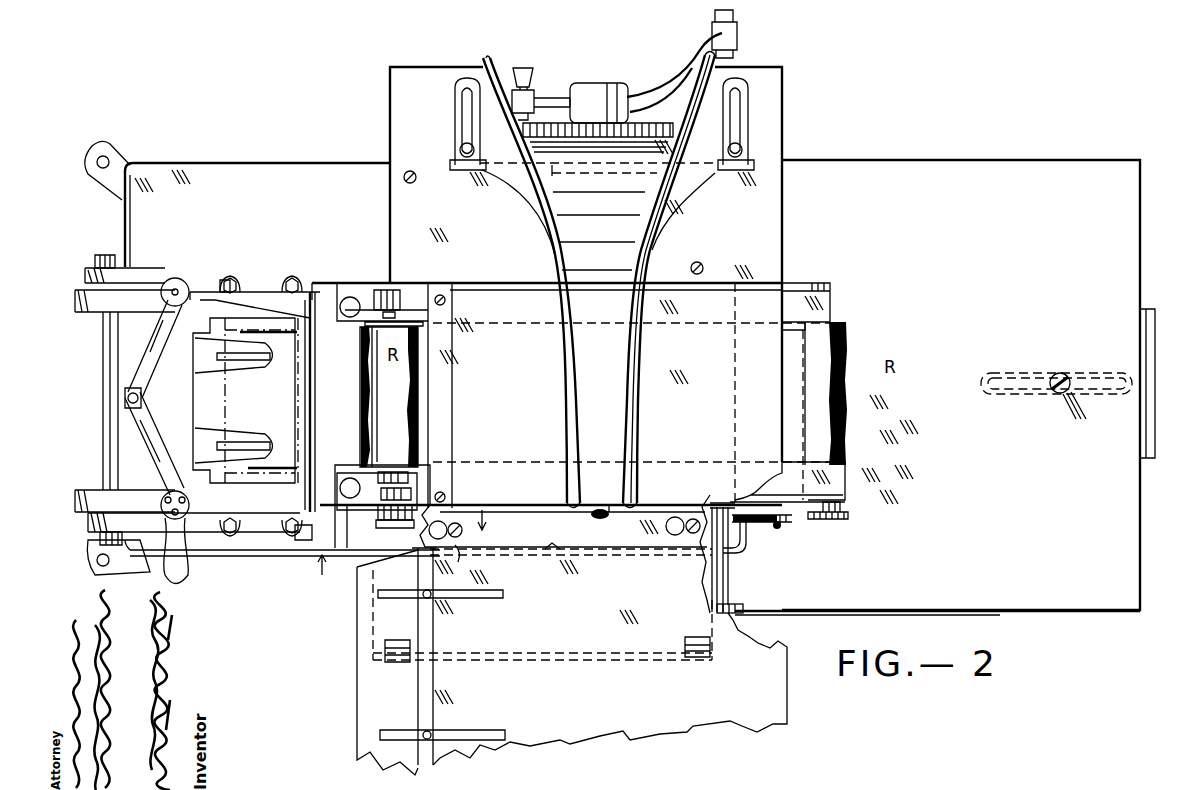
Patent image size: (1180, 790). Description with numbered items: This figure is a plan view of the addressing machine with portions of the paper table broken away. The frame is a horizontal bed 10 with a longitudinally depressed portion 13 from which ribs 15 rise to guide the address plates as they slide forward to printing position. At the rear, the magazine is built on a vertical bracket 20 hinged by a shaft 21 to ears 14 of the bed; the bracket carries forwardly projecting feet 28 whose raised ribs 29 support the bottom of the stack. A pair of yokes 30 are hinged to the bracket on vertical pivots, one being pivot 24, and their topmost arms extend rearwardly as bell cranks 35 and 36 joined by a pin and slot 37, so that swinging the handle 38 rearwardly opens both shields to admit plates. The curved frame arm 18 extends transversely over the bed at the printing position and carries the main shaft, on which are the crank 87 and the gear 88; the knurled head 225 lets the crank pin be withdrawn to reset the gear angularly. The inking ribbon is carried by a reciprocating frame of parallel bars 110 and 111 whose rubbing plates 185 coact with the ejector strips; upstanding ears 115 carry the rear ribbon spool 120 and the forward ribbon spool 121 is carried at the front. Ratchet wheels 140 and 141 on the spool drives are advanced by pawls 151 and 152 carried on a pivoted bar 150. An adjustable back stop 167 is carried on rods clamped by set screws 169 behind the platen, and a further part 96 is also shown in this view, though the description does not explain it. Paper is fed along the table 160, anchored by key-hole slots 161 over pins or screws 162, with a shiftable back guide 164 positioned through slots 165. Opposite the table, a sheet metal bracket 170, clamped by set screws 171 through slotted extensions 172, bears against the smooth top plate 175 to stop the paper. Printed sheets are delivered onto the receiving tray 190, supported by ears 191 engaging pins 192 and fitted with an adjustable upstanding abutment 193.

The horizontal bed 10 is at (289, 369).
The depressed portion 13 is at (350, 397).
The ears 14 is at (138, 272).
The ribs 15 is at (290, 462).
The curved frame arm 18 is at (598, 280).
The vertical bracket 20 is at (92, 309).
The shaft 21 is at (100, 380).
The vertical pivot 24 is at (180, 285).
The forwardly projecting feet 28 is at (212, 392).
The raised ribs 29 is at (264, 361).
The yokes 30 is at (266, 290).
The bell crank arm 35 is at (154, 443).
The bell crank arm 36 is at (155, 349).
The pin and slot 37 is at (125, 400).
The handle 38 is at (189, 569).
The crank 87 is at (690, 53).
The gear 88 is at (551, 112).
The stop 96 is at (598, 519).
The parallel bar 110 is at (850, 476).
The parallel bar 111 is at (320, 283).
The upstanding ears 115 is at (371, 285).
The rear ribbon spool 120 is at (360, 399).
The forward ribbon spool 121 is at (848, 354).
The ratchet wheel 140 is at (847, 519).
The ratchet wheel 141 is at (389, 528).
The bar 150 is at (617, 556).
The pawl 151 is at (304, 539).
The pawl 152 is at (792, 516).
The table 160 is at (572, 635).
The key-hole slots 161 is at (448, 522).
The pins or screws 162 is at (458, 550).
The back guide 164 is at (433, 636).
The slots 165 is at (493, 593).
The back stop 167 is at (452, 399).
The set screws 169 is at (352, 297).
The sheet metal bracket 170 is at (466, 166).
The set screws 171 is at (462, 136).
The slotted extensions 172 is at (466, 101).
The top plate 175 is at (586, 264).
The rubbing plates 185 is at (742, 418).
The receiving tray 190 is at (961, 385).
The ears 191 is at (831, 611).
The pins 192 is at (745, 608).
The upstanding abutment 193 is at (1128, 331).
The knurled head 225 is at (523, 68).